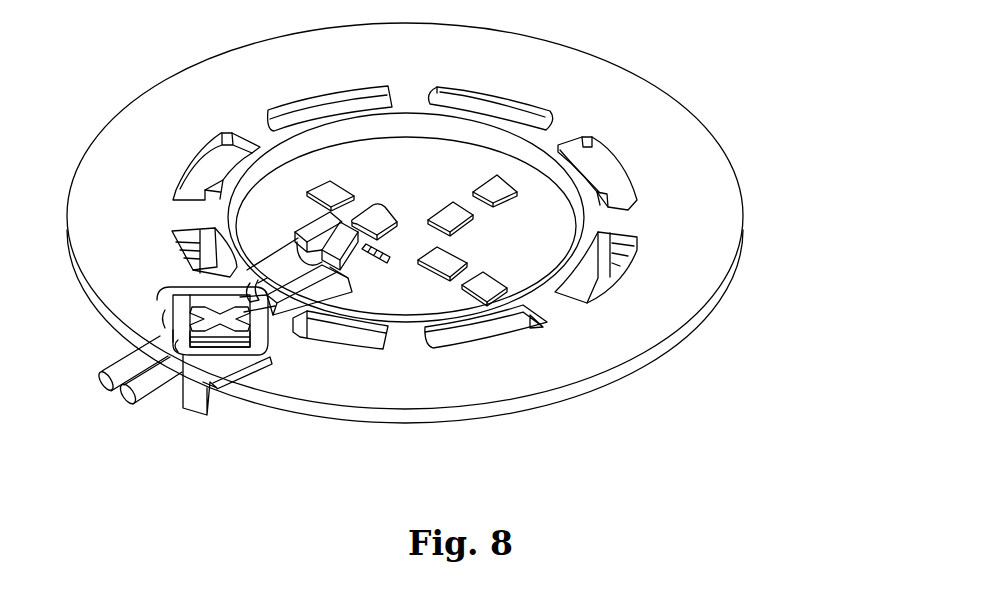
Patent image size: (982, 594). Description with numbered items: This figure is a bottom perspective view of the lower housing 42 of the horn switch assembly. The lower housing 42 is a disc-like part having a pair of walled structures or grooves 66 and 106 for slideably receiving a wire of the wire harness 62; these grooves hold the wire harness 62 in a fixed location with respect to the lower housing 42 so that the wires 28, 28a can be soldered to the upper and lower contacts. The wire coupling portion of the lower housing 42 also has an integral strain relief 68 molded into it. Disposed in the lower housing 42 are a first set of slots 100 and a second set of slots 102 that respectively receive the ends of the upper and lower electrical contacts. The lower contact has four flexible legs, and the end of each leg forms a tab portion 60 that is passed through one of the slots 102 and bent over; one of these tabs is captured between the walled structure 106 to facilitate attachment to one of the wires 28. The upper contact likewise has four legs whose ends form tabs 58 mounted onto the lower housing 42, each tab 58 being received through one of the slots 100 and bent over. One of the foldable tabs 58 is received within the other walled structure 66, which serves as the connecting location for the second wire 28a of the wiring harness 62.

The lower housing 42 is at (771, 285).
The tab 58 is at (510, 181).
The first set of slots 100 is at (353, 197).
The second set of slots 102 is at (418, 230).
The tab portion 60 is at (378, 216).
The walled structure 106 is at (303, 223).
The wire 28 is at (273, 258).
The second wire 28a is at (121, 405).
The wire harness 62 is at (143, 400).
The strain relief 68 is at (220, 322).
The walled structure 66 is at (340, 302).